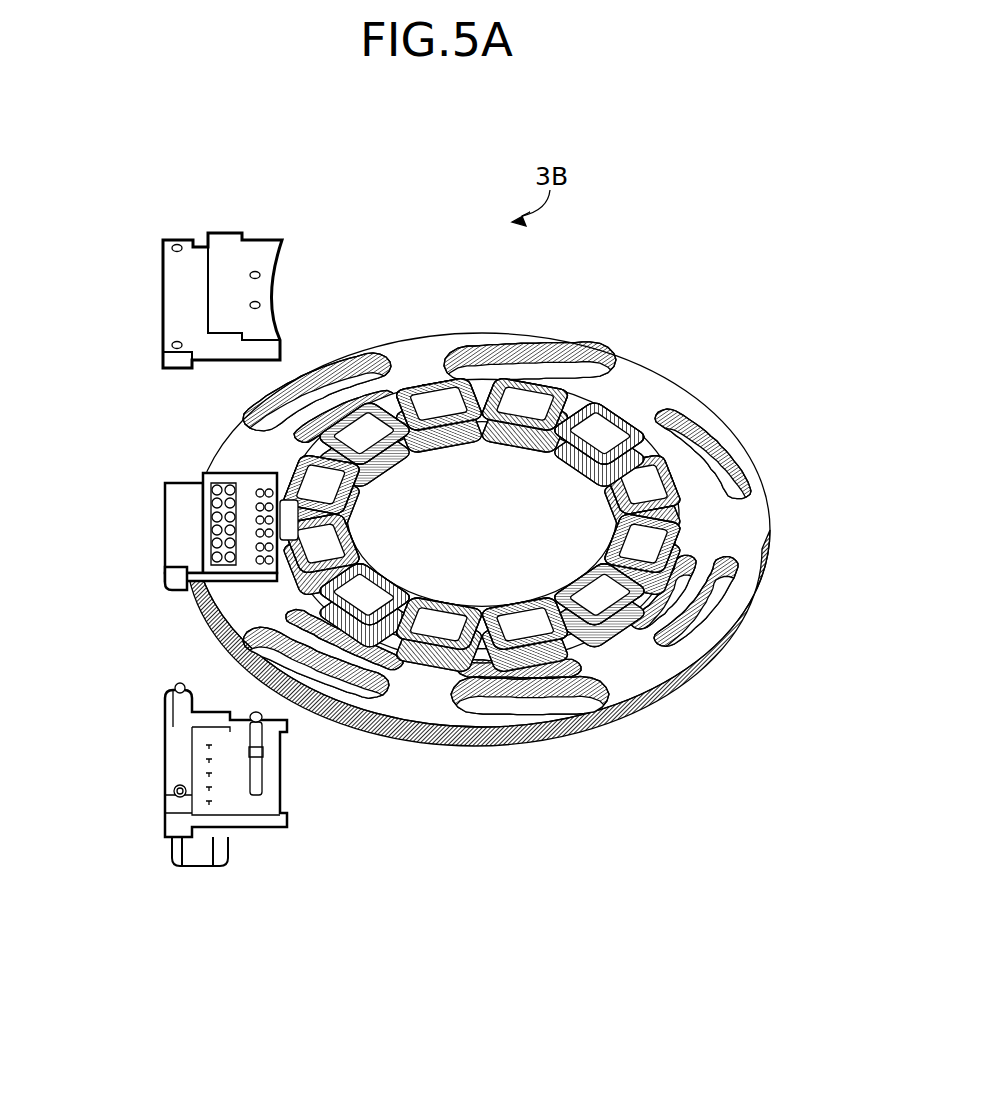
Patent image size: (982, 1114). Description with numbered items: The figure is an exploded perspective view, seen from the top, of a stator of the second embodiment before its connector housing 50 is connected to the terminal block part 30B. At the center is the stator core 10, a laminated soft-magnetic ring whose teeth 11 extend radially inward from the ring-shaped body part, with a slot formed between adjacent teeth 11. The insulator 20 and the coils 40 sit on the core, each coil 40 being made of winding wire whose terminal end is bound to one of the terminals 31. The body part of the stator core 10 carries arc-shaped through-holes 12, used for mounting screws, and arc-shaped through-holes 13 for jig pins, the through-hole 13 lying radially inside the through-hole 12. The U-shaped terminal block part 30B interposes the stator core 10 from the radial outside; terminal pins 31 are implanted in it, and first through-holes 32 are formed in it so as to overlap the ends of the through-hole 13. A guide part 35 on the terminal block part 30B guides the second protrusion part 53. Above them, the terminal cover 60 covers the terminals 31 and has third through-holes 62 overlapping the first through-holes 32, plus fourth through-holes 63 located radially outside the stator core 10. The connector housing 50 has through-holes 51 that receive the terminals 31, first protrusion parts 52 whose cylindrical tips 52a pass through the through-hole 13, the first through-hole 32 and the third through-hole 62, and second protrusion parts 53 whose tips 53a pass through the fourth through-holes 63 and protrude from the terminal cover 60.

The stator core 10 is at (748, 527).
The teeth 11 is at (572, 462).
The through-hole 12 is at (703, 455).
The through-hole 13 is at (683, 590).
The insulator 20 is at (440, 415).
The terminal block part 30B is at (232, 529).
The terminals 31 is at (220, 487).
The first through-hole 32 is at (312, 540).
The guide part 35 is at (180, 577).
The coil 40 is at (583, 418).
The connector housing 50 is at (218, 812).
The through-holes 51 is at (208, 780).
The first protrusion part 52 is at (309, 763).
The tip 52a is at (258, 745).
The second protrusion part 53 is at (127, 757).
The tip 53a is at (176, 792).
The terminal cover 60 is at (220, 300).
The third through-hole 62 is at (262, 303).
The fourth through-hole 63 is at (175, 345).